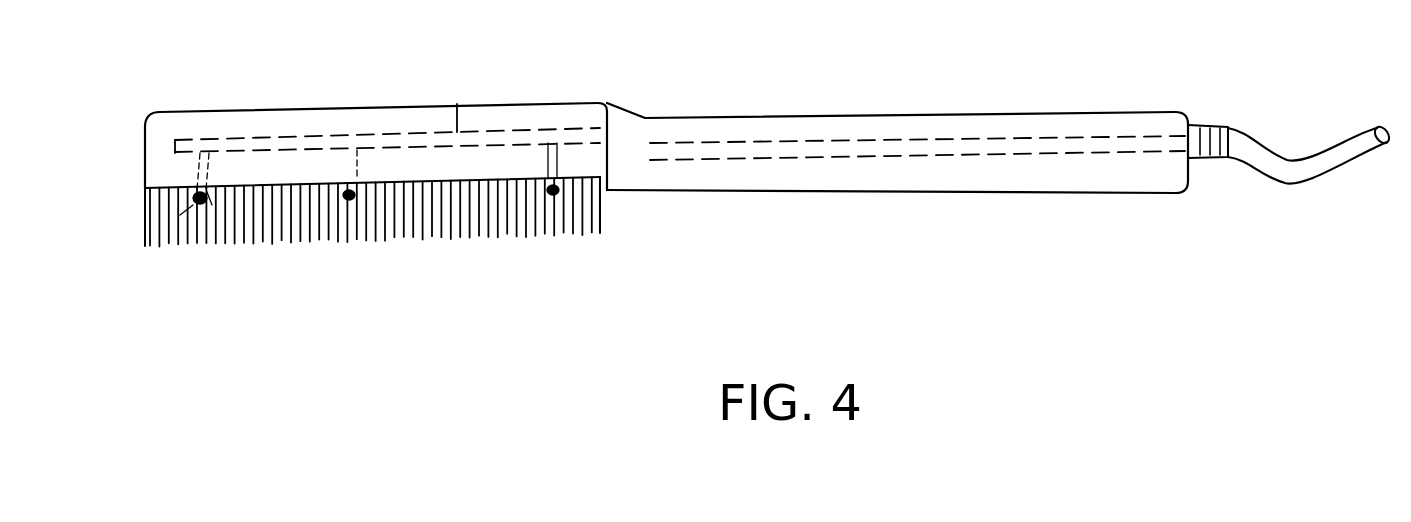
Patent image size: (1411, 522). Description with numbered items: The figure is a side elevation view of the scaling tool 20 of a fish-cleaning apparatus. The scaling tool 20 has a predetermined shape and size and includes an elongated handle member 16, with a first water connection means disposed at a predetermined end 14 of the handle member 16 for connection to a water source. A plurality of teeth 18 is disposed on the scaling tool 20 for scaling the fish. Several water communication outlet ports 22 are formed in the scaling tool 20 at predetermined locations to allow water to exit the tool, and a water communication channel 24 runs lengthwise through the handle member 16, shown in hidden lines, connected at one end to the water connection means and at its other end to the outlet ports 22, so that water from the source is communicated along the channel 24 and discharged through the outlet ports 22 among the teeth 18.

The predetermined end 14 is at (1190, 185).
The handle member 16 is at (873, 128).
The teeth 18 is at (420, 245).
The scaling tool 20 is at (641, 252).
The water communication outlet port 22 is at (200, 195).
The water communication channel 24 is at (459, 102).